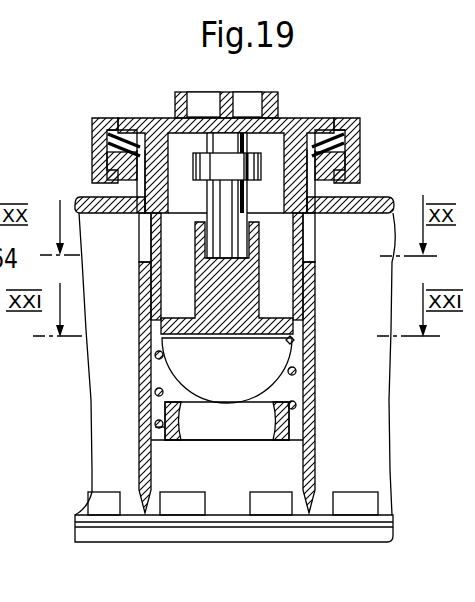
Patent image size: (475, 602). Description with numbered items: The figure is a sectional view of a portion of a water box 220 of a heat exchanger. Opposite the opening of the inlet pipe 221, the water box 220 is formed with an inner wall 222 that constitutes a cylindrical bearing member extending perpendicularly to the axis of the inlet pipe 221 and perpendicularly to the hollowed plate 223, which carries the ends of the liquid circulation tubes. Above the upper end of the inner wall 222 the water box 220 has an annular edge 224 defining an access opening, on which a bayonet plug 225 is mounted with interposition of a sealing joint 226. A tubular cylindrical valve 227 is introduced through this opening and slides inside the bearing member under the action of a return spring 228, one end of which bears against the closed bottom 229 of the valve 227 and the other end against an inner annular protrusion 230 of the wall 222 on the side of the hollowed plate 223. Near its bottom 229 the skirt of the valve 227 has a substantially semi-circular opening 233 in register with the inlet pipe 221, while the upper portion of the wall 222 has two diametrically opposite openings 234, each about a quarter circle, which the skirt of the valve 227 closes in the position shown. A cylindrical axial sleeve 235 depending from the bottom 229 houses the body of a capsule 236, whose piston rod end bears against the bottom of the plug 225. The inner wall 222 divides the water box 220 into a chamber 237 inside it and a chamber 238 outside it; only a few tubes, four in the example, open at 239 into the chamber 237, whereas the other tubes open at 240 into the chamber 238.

The water box 220 is at (380, 183).
The inlet pipe 221 is at (178, 368).
The inner wall 222 is at (316, 376).
The hollowed plate 223 is at (193, 532).
The annular edge 224 is at (362, 160).
The bayonet plug 225 is at (318, 118).
The sealing joint 226 is at (104, 140).
The tubular cylindrical valve 227 is at (311, 240).
The return spring 228 is at (152, 402).
The closed bottom 229 is at (232, 334).
The inner annular protrusion 230 is at (180, 418).
The semi-circular opening 233 is at (313, 286).
The diametrically opposite openings 234 is at (138, 238).
The cylindrical axial sleeve 235 is at (192, 266).
The capsule 236 is at (205, 202).
The chamber 237 is at (257, 477).
The chamber 238 is at (112, 444).
The tube openings into inner chamber 239 is at (200, 498).
The tube openings into outer chamber 240 is at (368, 498).